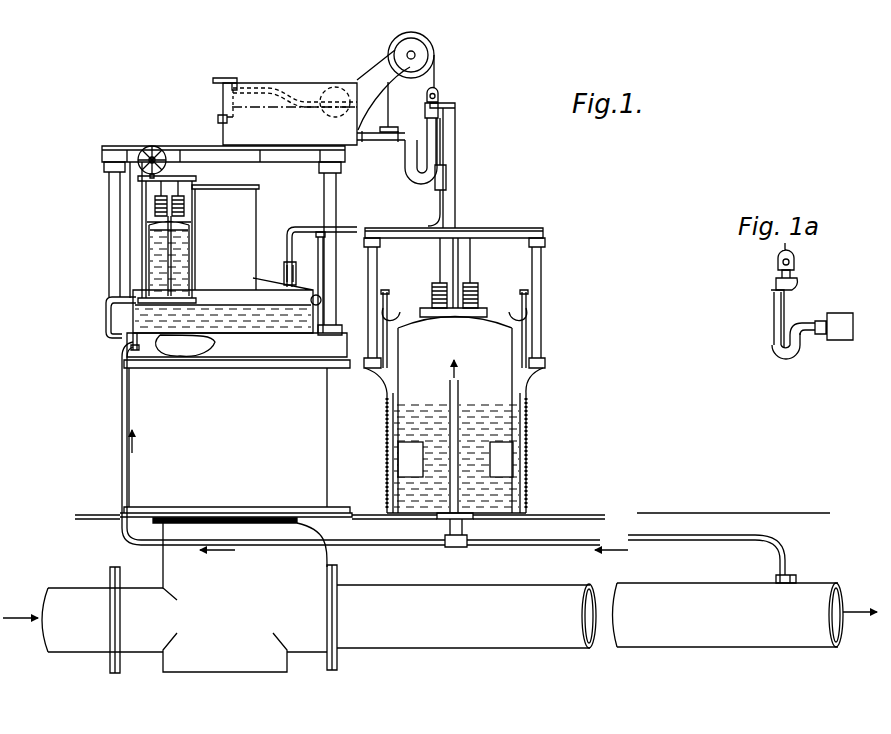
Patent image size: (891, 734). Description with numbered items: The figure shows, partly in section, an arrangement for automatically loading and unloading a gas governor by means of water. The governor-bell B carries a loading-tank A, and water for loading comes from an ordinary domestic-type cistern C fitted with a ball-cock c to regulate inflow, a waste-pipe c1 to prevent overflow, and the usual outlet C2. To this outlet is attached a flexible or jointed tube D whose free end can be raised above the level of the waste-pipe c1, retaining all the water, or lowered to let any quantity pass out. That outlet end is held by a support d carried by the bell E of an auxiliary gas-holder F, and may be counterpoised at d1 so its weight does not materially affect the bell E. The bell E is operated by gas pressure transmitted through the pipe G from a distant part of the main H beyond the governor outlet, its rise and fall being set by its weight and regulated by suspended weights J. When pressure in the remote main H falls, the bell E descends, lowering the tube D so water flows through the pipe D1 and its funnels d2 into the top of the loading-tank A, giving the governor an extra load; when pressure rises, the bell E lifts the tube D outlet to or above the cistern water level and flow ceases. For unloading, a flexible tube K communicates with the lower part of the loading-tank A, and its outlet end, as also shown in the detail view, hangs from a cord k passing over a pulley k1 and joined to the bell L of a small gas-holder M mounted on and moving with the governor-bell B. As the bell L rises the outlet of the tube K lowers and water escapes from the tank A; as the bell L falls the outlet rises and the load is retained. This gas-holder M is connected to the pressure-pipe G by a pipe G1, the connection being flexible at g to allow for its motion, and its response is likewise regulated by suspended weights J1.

In FIG. 1, the loading-tank A is at (227, 259).
In FIG. 1, the governor-bell B is at (237, 350).
In FIG. 1, the cistern C is at (290, 114).
In FIG. 1, the outlet C2 is at (372, 146).
In FIG. 1, the ball-cock c is at (238, 82).
In FIG. 1, the waste-pipe c1 is at (218, 120).
In FIG. 1, the flexible tube D is at (414, 179).
In FIG. 1, the pipe D1 is at (379, 232).
In FIG. 1, the support d is at (451, 103).
In FIG. 1, the counterpoise d1 is at (425, 109).
In FIG. 1, the funnels d2 is at (440, 197).
In FIG. 1, the bell E is at (455, 415).
In FIG. 1, the auxiliary gas-holder F is at (513, 442).
In FIG. 1, the pipe G is at (512, 545).
In FIG. 1, the pipe G1 is at (121, 362).
In FIG. 1, the main H is at (440, 598).
In FIG. 1, the suspended weights J is at (434, 292).
In FIG. 1, the suspended weights J1 is at (185, 207).
In FIG. 1, the flexible tube K is at (140, 346).
In FIG. 1A, the flexible tube K is at (771, 341).
In FIG. 1, the cord k is at (130, 214).
In FIG. 1A, the cord k is at (794, 257).
In FIG. 1, the pulley k1 is at (152, 148).
In FIG. 1, the bell L is at (192, 228).
In FIG. 1, the small gas-holder M is at (190, 272).
In FIG. 1, the flexible connection g is at (106, 324).